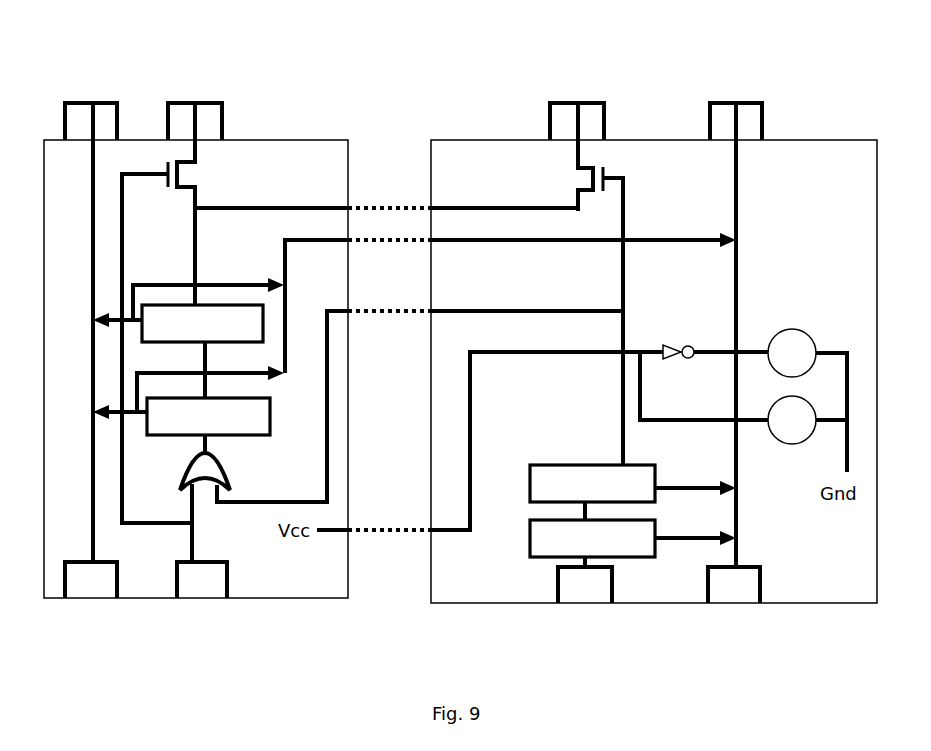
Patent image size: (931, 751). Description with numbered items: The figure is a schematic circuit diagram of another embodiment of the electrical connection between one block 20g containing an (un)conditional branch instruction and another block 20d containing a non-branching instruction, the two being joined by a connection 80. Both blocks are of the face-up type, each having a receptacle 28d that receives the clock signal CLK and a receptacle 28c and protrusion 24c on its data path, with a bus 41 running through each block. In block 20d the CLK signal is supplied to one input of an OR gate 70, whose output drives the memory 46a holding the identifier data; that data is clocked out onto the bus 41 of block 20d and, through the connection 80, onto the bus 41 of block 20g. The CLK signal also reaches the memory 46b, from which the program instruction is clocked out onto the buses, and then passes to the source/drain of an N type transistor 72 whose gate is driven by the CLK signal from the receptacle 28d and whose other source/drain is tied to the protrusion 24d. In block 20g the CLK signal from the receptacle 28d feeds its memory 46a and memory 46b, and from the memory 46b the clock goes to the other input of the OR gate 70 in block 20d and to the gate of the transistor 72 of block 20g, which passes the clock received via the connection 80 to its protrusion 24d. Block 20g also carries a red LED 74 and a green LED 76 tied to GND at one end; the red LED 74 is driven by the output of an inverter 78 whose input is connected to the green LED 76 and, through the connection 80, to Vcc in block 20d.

The block 20d is at (305, 173).
The block 20g is at (855, 289).
The protrusion 24c is at (413, 79).
The protrusion 24d is at (386, 79).
The receptacle 28c is at (414, 615).
The receptacle 28d is at (395, 617).
The bus 41 is at (92, 255).
The memory 46a is at (247, 407).
The memory 46b is at (236, 304).
The OR gate 70 is at (200, 460).
The N type transistor 72 is at (372, 313).
The red LED 74 is at (795, 329).
The green LED 76 is at (785, 433).
The inverter 78 is at (672, 328).
The connection 80 is at (389, 369).